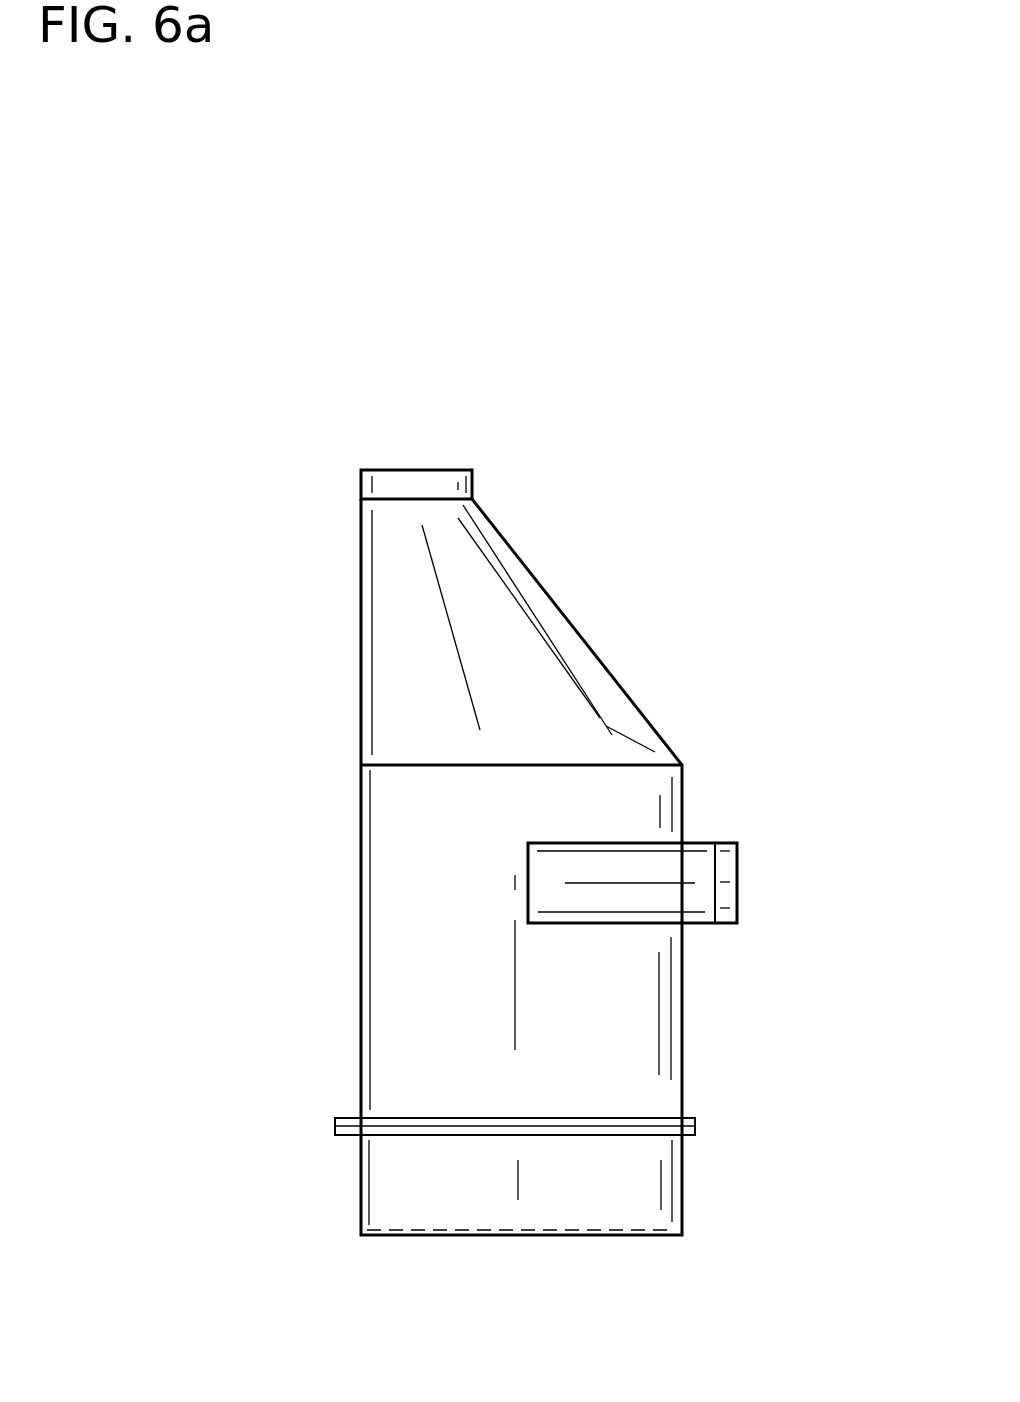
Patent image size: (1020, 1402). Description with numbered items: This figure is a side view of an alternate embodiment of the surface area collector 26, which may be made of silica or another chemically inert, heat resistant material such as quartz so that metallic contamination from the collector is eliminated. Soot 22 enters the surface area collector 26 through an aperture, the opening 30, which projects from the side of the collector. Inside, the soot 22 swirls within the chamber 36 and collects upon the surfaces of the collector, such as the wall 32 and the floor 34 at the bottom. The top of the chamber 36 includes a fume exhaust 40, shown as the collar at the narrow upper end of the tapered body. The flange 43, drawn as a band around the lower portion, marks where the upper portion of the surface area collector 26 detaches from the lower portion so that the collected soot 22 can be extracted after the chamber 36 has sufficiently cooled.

The surface area collector 26 is at (703, 492).
The fume exhaust 40 is at (413, 470).
The soot 22 is at (695, 843).
The opening 30 is at (737, 904).
The wall 32 is at (682, 973).
The chamber 36 is at (626, 1040).
The flange 43 is at (695, 1125).
The floor 34 is at (627, 1237).